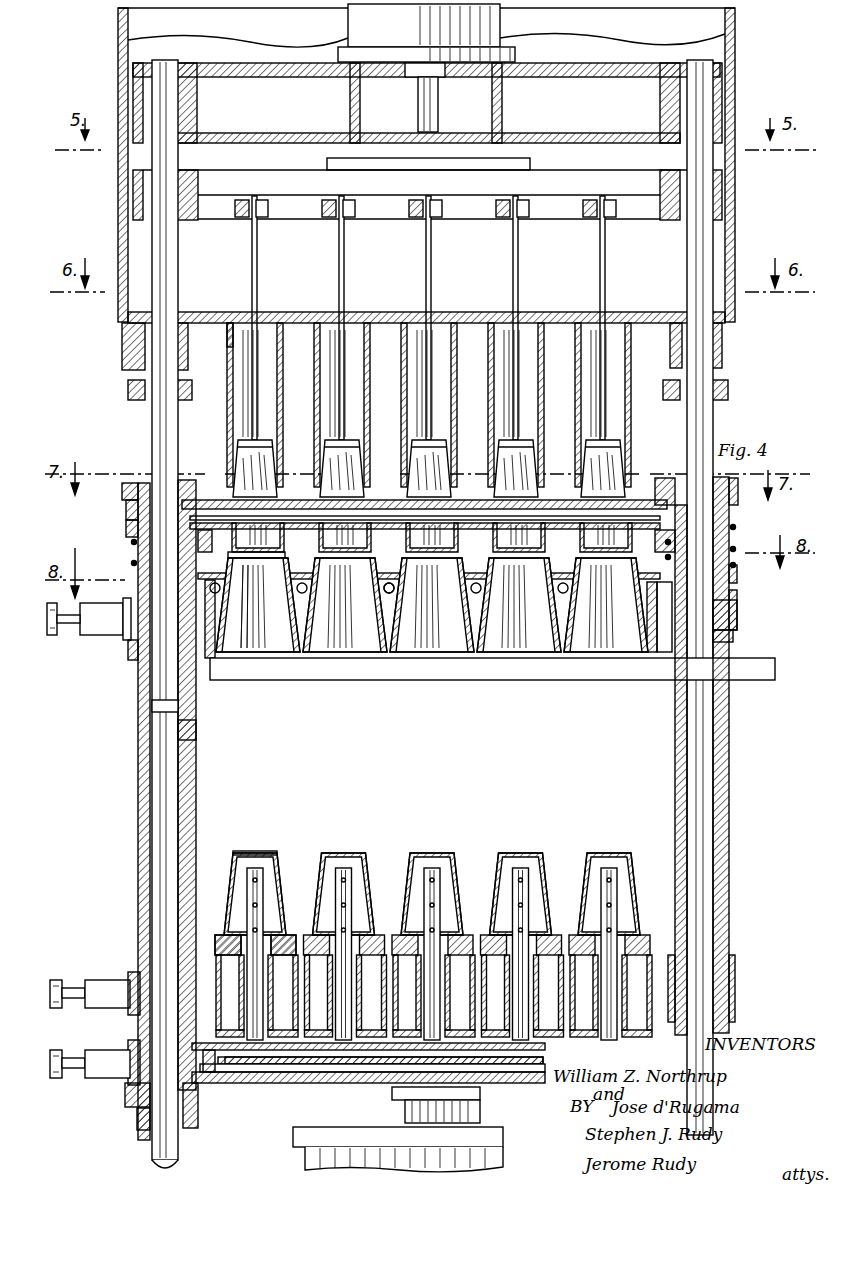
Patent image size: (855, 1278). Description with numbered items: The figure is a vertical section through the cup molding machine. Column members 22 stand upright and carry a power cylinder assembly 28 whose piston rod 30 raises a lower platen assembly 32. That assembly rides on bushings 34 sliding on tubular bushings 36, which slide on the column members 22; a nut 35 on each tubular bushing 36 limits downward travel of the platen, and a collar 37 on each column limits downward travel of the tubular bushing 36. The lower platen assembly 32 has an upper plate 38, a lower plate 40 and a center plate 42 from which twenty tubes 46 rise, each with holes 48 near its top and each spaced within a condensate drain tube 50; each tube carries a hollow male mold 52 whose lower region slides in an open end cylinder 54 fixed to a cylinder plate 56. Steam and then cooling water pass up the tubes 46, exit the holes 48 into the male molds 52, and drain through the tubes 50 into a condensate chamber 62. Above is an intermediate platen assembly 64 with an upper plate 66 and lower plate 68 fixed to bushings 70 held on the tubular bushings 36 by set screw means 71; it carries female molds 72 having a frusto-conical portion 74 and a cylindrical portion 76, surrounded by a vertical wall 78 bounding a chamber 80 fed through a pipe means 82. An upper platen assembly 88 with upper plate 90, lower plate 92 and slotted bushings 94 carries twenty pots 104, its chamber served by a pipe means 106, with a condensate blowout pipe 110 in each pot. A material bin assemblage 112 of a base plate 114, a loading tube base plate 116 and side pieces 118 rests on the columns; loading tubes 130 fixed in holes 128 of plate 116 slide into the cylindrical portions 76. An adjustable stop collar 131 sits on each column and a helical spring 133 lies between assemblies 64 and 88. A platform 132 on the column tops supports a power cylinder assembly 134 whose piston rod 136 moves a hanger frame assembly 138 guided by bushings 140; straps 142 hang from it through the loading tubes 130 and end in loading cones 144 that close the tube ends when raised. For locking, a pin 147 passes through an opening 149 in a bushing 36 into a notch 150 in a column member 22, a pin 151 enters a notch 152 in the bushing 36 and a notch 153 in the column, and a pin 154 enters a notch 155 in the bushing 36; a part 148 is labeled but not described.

The column members 22 is at (135, 400).
The power cylinder assembly 28 is at (303, 1160).
The piston rod 30 is at (400, 1096).
The lower platen assembly 32 is at (275, 1082).
The bushings 34 is at (205, 1090).
The nut 35 is at (206, 1100).
The tubular bushing 36 is at (196, 772).
The collar 37 is at (135, 1128).
The upper plate 38 is at (130, 1052).
The lower plate 40 is at (236, 1086).
The center plate 42 is at (312, 1068).
The tubes 46 is at (270, 855).
The holes 48 is at (248, 900).
The condensate drain tube 50 is at (230, 948).
The male mold 52 is at (255, 851).
The open end cylinder 54 is at (300, 940).
The cylinder plate 56 is at (130, 1020).
The condensate chamber 62 is at (392, 1055).
The intermediate platen assembly 64 is at (737, 616).
The upper plate 66 is at (202, 575).
The lower plate 68 is at (662, 680).
The bushing 70 is at (737, 606).
The set screw means 71 is at (735, 634).
The female molds 72 is at (293, 638).
The frusto-conical portion 74 is at (232, 626).
The cylindrical portion 76 is at (255, 580).
The vertical wall 78 is at (206, 665).
The chamber 80 is at (482, 660).
The pipe means 82 is at (386, 592).
The upper platen assembly 88 is at (737, 513).
The upper plate 90 is at (124, 505).
The lower plate 92 is at (128, 528).
The bushing 94 is at (126, 514).
The molding heads, or pots 104 is at (300, 550).
The pipe means 106 is at (465, 516).
The condensate blowout pipe 110 is at (347, 541).
The material bin assemblage 112 is at (735, 226).
The base plate 114 is at (128, 308).
The loading tube base plate 116 is at (122, 328).
The side pieces 118 is at (735, 88).
The holes 128 is at (230, 338).
The cylindrical loading tube 130 is at (228, 418).
The adjustable stop collar 131 is at (128, 385).
The platform 132 is at (290, 62).
The helical spring 133 is at (737, 570).
The power cylinder assembly 134 is at (500, 29).
The piston rod 136 is at (423, 105).
The hanger frame assembly 138 is at (371, 226).
The bushing 140 is at (733, 183).
The straps 142 is at (258, 290).
The loading cone 144 is at (330, 497).
The pin 147 is at (80, 630).
The block 148 is at (140, 620).
The opening 149 is at (148, 660).
The notch 150 is at (140, 560).
The pin 151 is at (87, 990).
The notch 152 is at (155, 706).
The notch 153 is at (190, 730).
The pin 154 is at (87, 1062).
The notch 155 is at (138, 797).